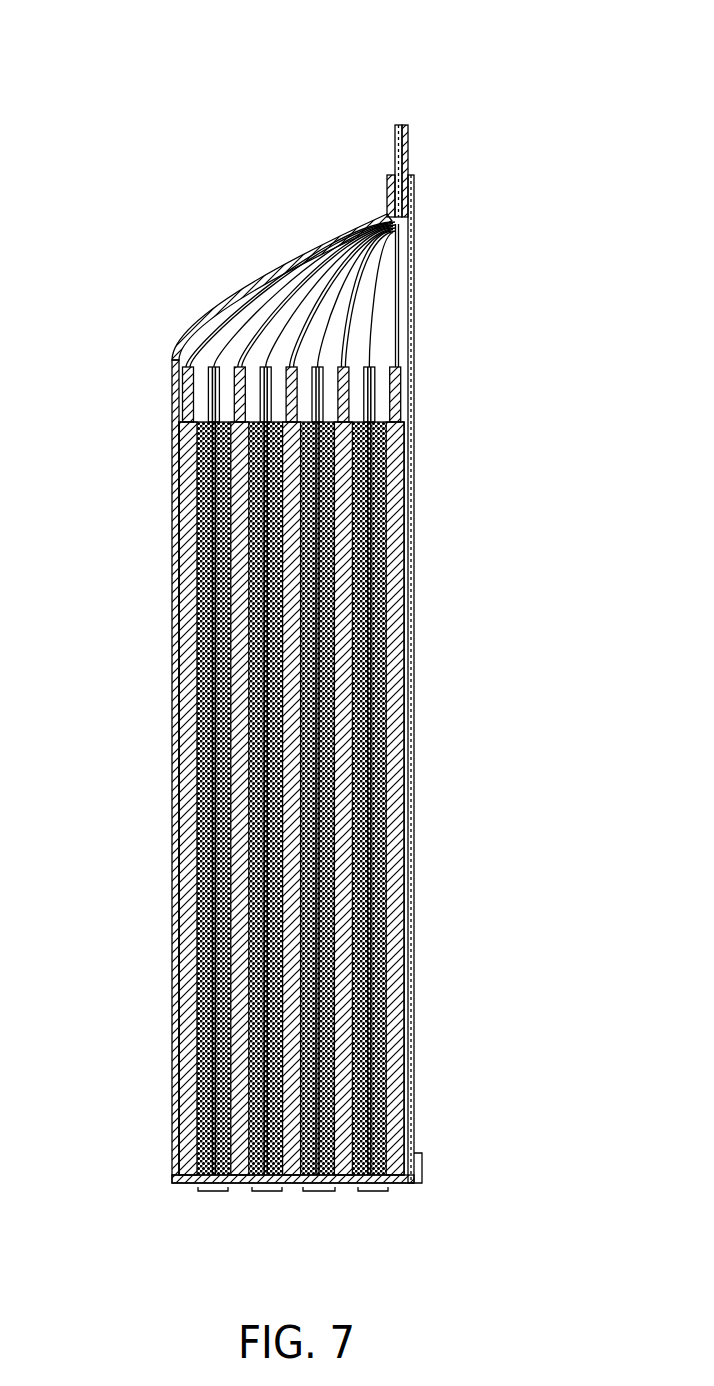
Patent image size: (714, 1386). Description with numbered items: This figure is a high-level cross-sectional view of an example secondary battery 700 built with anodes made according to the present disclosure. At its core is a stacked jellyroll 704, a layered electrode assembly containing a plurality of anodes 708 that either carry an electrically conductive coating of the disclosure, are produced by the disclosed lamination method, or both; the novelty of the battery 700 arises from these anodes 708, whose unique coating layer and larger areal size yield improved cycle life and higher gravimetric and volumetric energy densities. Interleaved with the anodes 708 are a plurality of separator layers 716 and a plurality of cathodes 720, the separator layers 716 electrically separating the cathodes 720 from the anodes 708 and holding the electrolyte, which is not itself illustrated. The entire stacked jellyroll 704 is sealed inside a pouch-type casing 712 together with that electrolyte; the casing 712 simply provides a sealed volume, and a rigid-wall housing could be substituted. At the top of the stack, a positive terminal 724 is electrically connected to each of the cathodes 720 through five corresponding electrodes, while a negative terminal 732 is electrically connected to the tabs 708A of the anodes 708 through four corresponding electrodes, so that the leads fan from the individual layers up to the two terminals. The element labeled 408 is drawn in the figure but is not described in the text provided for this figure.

The secondary battery 700 is at (553, 45).
The stacked jellyroll 704 is at (184, 1125).
The anodes 708 is at (213, 1194).
The tabs 708A is at (263, 403).
The pouch-type casing 712 is at (412, 708).
The separator layers 716 is at (257, 938).
The cathodes 720 is at (295, 683).
The positive terminal 724 is at (396, 140).
The negative terminal 732 is at (409, 142).
The insulating sheath 408 is at (190, 342).